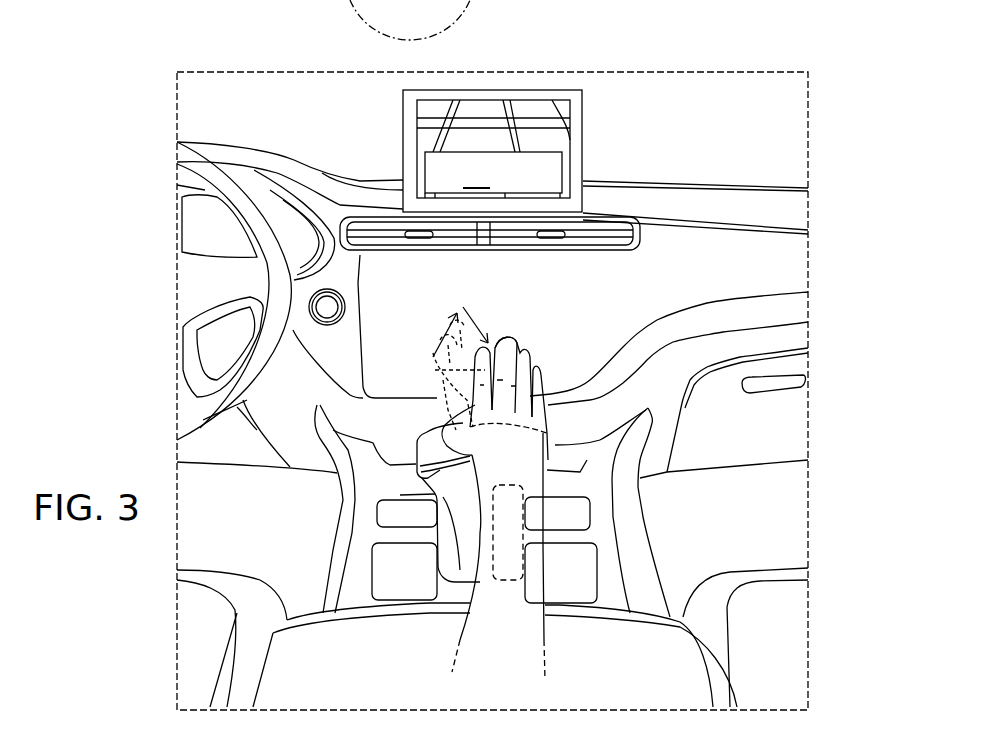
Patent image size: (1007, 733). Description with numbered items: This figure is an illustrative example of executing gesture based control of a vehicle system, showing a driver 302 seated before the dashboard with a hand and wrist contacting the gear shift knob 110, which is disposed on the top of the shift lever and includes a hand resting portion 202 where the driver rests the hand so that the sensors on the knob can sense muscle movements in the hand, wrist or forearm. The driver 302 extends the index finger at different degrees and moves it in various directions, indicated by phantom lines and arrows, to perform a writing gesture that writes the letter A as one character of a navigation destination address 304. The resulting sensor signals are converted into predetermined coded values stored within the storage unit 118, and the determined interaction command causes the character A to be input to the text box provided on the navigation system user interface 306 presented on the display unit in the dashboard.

The storage unit 118 is at (553, 88).
The navigation system user interface 306 is at (425, 165).
The gear shift knob 110 is at (430, 432).
The hand resting portion 202 is at (537, 447).
The navigation destination address 304 is at (509, 341).
The driver 302 is at (517, 617).